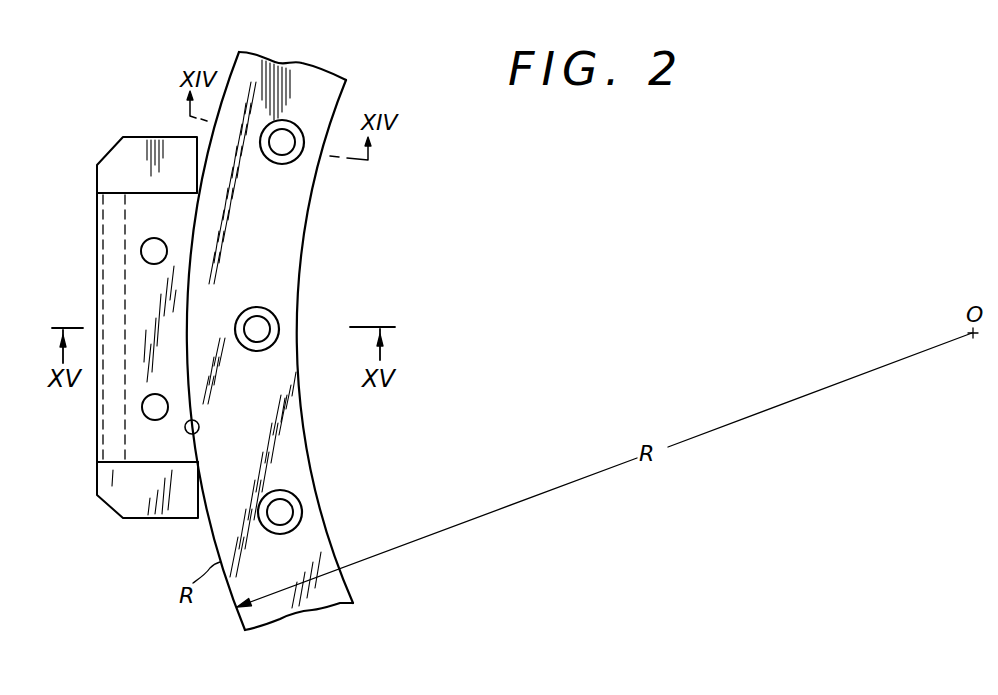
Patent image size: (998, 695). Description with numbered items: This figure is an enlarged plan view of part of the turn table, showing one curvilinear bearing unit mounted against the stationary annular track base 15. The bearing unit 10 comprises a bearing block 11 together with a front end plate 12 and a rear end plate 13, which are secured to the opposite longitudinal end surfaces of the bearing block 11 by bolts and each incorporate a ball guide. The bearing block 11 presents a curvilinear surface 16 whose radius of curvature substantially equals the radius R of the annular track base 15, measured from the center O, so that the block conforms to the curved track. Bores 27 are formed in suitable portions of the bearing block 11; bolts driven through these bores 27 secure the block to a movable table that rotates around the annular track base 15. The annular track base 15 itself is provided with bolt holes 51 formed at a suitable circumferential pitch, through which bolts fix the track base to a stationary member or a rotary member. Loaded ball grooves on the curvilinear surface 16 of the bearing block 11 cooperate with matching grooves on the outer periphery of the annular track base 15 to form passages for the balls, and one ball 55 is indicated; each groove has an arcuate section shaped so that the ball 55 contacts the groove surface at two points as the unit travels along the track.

The mounting block 10 is at (95, 292).
The bearing block 11 is at (140, 343).
The front end plate 12 is at (147, 152).
The rear end plate 13 is at (140, 510).
The stationary annular track base 15 is at (337, 588).
The curvilinear surface 16 is at (188, 282).
The bores 27 is at (148, 242).
The bolt holes 51 is at (298, 137).
The ball 55 is at (199, 423).